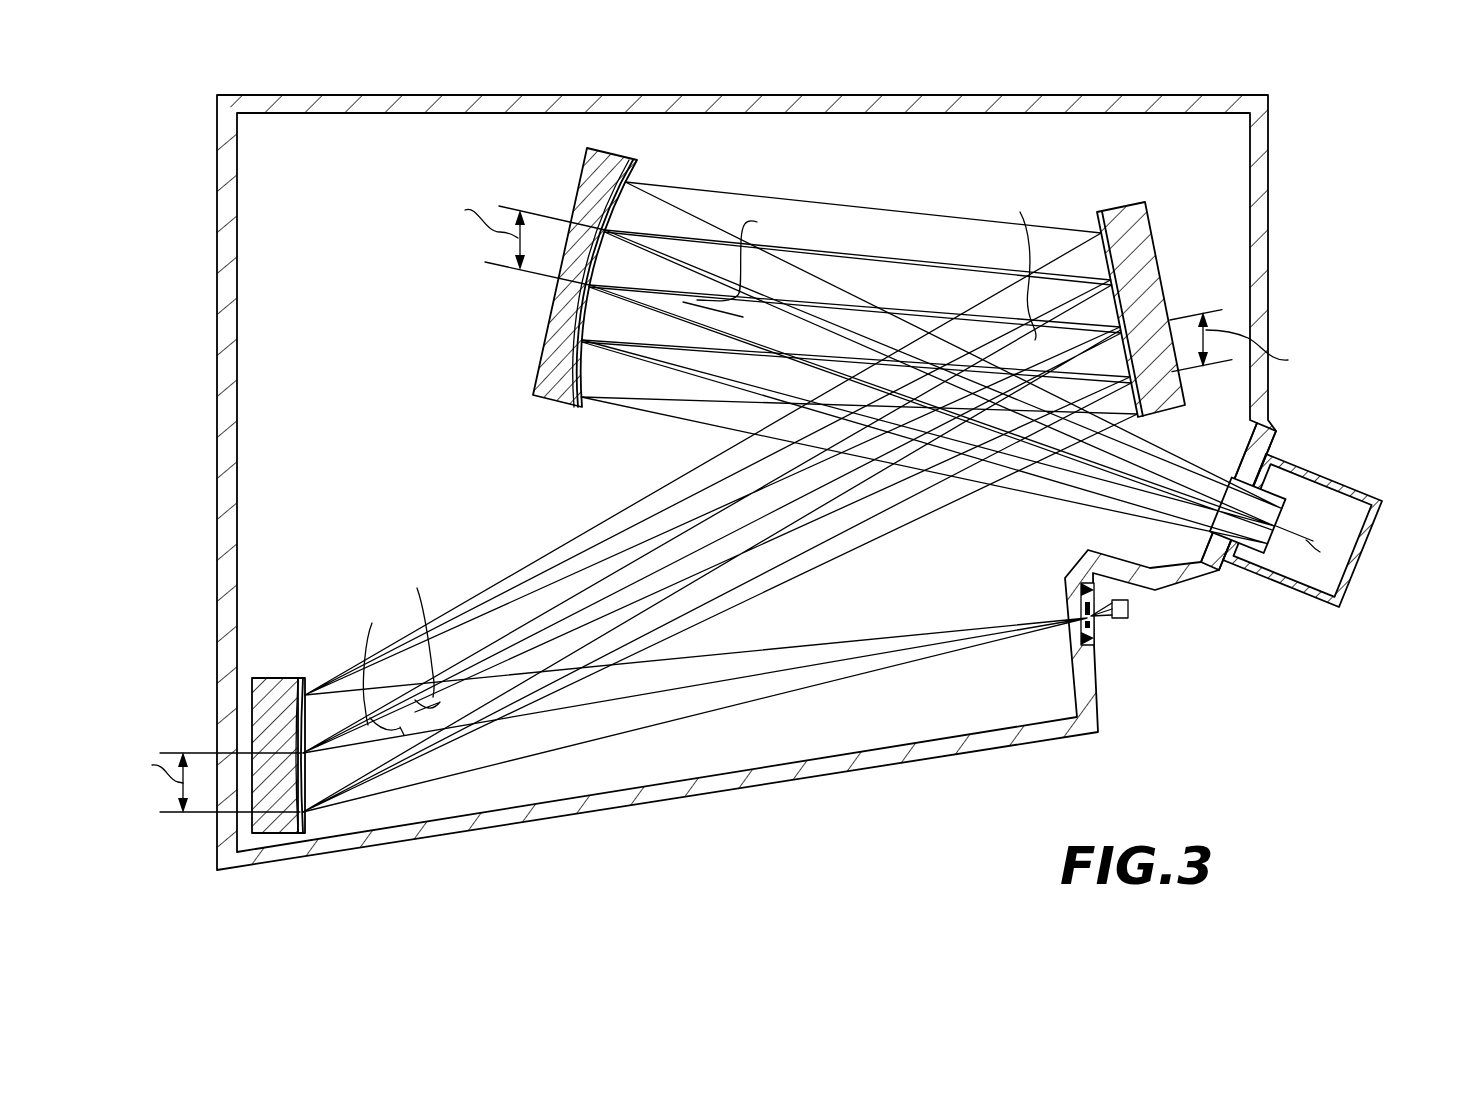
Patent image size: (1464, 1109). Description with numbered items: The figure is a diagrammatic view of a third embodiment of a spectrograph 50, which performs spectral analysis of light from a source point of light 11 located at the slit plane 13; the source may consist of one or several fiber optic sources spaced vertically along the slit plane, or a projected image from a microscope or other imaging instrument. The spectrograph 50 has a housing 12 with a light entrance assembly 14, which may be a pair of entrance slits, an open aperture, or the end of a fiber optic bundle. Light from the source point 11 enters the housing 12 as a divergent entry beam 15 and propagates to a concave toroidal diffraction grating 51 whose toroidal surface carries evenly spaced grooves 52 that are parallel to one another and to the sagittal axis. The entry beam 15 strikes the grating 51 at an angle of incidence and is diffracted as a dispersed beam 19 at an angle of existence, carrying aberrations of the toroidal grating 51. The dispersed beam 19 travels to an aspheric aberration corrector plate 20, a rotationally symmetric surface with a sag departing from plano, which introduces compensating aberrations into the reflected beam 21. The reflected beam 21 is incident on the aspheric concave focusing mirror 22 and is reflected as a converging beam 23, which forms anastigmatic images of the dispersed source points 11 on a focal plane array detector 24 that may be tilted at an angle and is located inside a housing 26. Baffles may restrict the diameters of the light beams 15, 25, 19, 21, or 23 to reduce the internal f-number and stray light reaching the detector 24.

The source point of light 11 is at (1100, 620).
The housing 12 is at (217, 327).
The slit plane 13 is at (1100, 633).
The light entrance assembly 14 is at (1128, 598).
The divergent entry beam 15 is at (848, 665).
The dispersed beam 19 is at (598, 528).
The aspheric aberration corrector plate 20 is at (1157, 252).
The reflected beam 21 is at (897, 260).
The aspheric concave focusing mirror 22 is at (580, 372).
The converging beam 23 is at (1078, 468).
The focal plane array detector 24 is at (1287, 517).
The light beam 25 is at (1276, 433).
The housing 26 is at (1363, 571).
The spectrograph 50 is at (203, 230).
The concave toroidal diffraction grating 51 is at (258, 688).
The grooves 52 is at (298, 724).